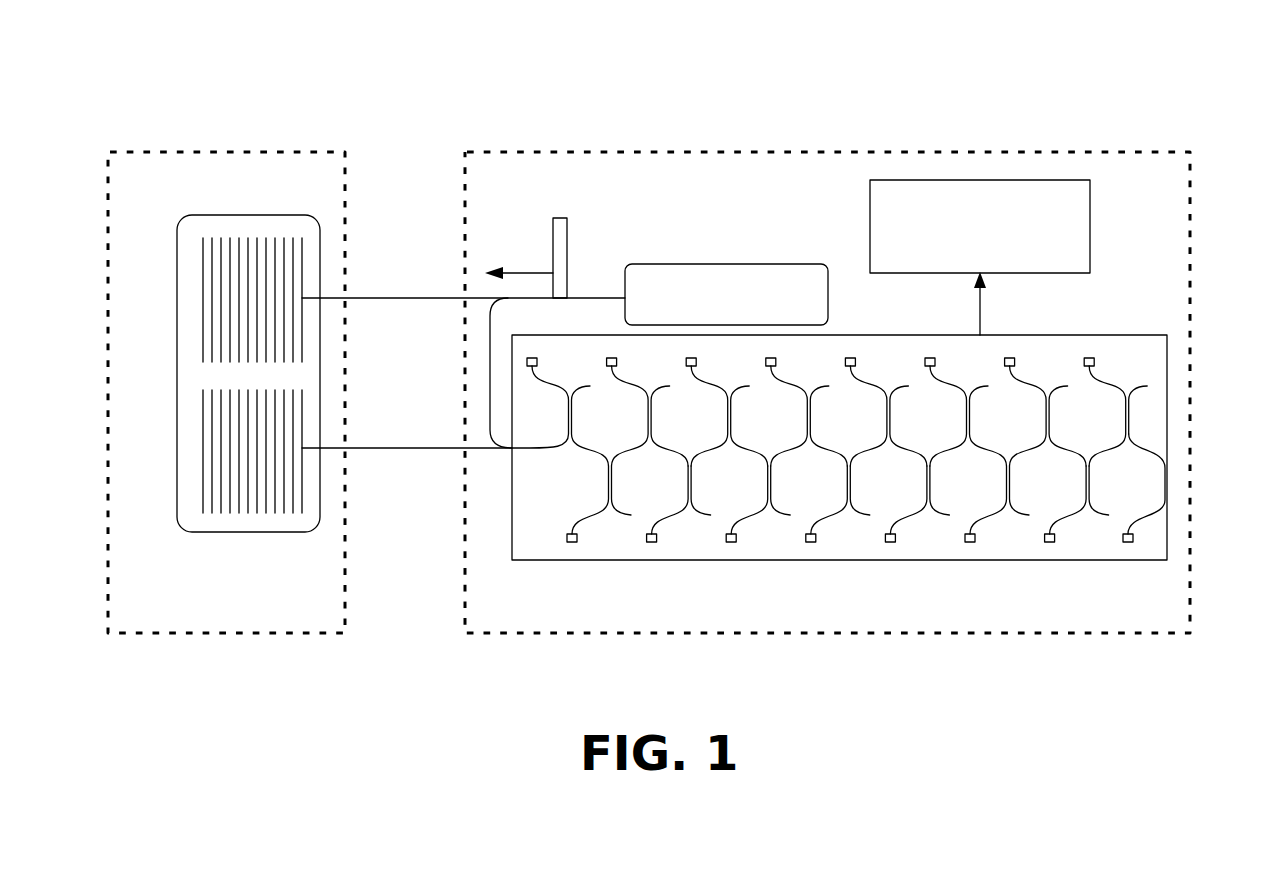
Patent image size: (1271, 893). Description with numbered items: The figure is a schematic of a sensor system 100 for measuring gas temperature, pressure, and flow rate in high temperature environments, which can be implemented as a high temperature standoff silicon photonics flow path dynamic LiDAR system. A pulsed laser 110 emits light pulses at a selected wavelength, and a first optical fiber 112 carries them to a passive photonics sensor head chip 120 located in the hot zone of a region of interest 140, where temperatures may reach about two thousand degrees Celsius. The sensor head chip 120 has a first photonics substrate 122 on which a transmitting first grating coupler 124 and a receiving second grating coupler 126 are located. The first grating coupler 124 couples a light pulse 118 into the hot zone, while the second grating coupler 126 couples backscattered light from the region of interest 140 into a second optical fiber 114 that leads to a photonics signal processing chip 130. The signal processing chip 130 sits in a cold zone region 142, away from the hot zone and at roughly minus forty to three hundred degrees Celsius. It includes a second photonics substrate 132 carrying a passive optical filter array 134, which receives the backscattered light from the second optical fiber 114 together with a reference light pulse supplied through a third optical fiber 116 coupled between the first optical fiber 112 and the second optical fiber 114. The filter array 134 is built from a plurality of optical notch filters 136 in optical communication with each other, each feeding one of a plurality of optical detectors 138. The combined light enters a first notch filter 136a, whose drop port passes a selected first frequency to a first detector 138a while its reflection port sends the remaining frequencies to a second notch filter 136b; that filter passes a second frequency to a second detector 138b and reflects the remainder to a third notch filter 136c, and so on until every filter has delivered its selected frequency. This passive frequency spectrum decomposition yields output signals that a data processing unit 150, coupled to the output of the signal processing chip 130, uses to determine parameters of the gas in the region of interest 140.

The sensor system 100 is at (749, 78).
The pulsed laser 110 is at (712, 264).
The first optical fiber 112 is at (437, 297).
The second optical fiber 114 is at (372, 452).
The third optical fiber 116 is at (490, 380).
The light pulse 118 is at (567, 258).
The passive photonics sensor head chip 120 is at (172, 497).
The first photonics substrate 122 is at (207, 376).
The first grating coupler 124 is at (230, 296).
The second grating coupler 126 is at (255, 490).
The photonics signal processing chip 130 is at (1004, 566).
The second photonics substrate 132 is at (546, 543).
The passive optical filter array 134 is at (1160, 422).
The optical notch filters 136 is at (880, 443).
The first notch filter 136a is at (606, 415).
The second notch filter 136b is at (607, 490).
The third notch filter 136c is at (686, 415).
The optical detectors 138 is at (929, 357).
The first detector 138a is at (530, 357).
The second detector 138b is at (572, 543).
The region of interest 140 is at (108, 297).
The cold zone region 142 is at (1190, 259).
The data processing unit 150 is at (868, 240).